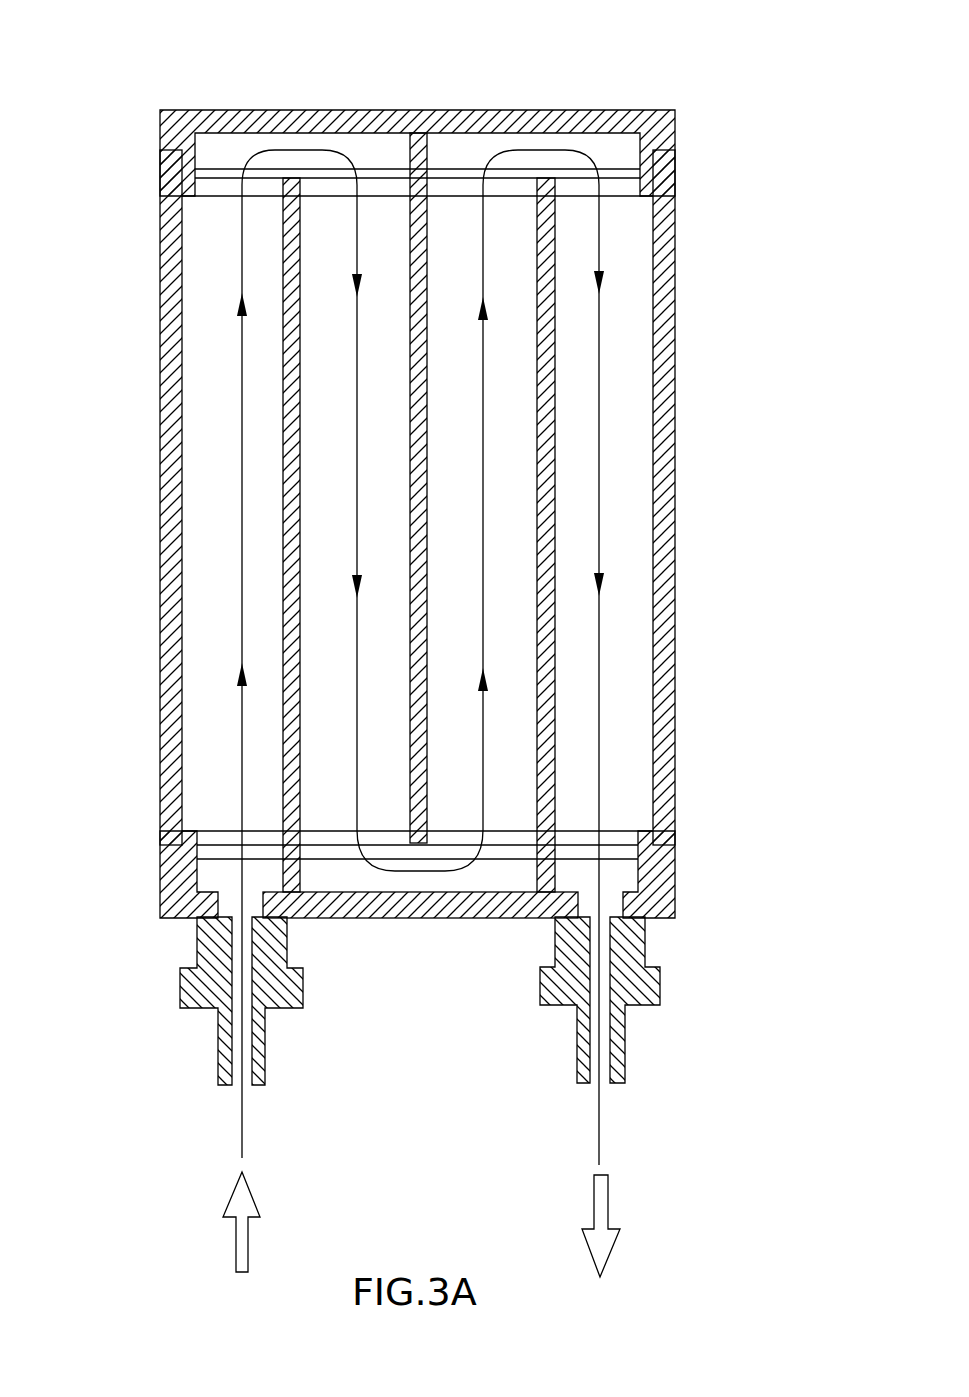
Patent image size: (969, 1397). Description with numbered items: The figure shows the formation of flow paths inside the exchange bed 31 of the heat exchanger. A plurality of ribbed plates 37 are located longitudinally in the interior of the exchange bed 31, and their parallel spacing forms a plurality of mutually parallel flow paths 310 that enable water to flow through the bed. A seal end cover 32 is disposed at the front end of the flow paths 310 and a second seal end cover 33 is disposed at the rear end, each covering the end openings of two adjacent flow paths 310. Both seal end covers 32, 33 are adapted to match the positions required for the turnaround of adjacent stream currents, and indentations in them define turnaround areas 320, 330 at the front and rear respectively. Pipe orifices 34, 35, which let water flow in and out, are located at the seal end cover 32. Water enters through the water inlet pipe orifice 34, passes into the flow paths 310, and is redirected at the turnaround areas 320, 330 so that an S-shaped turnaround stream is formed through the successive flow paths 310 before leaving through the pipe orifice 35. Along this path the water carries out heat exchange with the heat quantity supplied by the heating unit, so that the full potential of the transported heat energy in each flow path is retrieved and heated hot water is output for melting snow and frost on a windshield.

The exchange bed 31 is at (706, 472).
The flow paths 310 is at (598, 647).
The seal end cover 32 is at (165, 890).
The turnaround area 320 is at (495, 870).
The seal end cover 33 is at (392, 110).
The turnaround area 330 is at (245, 148).
The water inlet pipe orifice 34 is at (200, 985).
The pipe orifice 35 is at (632, 985).
The ribbed plates 37 is at (548, 372).